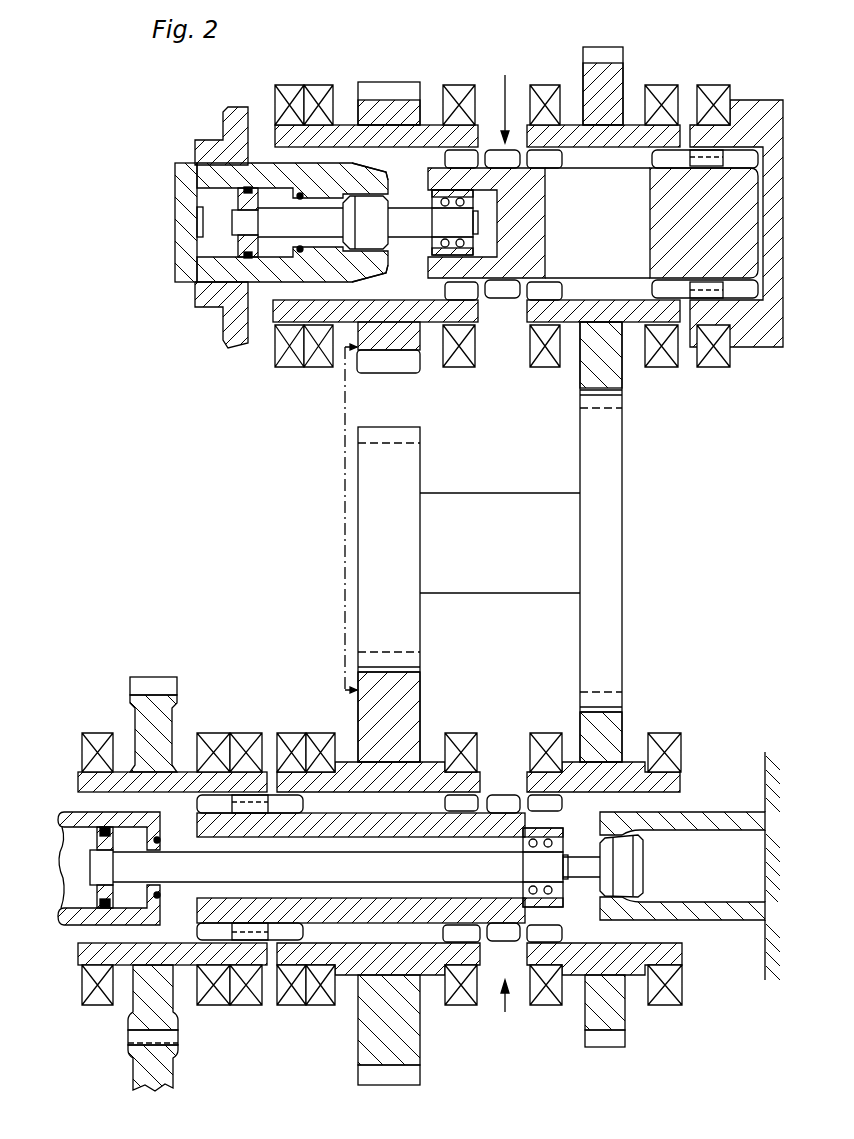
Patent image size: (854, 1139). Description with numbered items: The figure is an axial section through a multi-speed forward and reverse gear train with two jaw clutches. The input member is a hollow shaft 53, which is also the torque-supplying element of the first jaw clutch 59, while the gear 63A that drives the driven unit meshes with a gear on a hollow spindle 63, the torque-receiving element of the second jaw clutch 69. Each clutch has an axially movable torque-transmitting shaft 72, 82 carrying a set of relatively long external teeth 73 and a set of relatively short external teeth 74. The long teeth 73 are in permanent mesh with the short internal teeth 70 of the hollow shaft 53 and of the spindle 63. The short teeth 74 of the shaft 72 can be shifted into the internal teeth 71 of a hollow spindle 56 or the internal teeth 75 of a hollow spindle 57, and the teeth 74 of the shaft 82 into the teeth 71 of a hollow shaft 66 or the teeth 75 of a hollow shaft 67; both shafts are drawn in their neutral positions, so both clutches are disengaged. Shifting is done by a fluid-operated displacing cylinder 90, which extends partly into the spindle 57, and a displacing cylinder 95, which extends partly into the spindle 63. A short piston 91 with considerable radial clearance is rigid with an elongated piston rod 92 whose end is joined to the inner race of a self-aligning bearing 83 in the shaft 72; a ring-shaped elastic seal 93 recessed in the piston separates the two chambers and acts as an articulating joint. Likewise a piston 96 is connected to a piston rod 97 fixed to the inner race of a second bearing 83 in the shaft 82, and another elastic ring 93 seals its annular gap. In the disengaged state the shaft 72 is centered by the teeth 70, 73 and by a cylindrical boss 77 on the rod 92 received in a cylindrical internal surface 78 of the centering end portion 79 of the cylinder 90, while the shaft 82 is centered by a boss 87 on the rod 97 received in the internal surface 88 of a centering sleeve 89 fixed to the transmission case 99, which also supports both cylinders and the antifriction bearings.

The hollow shaft 53 is at (757, 340).
The hollow spindle 56 is at (580, 122).
The hollow spindle 57 is at (423, 120).
The first jaw clutch 59 is at (504, 96).
The hollow spindle 63 is at (183, 767).
The gear 63A is at (167, 1077).
The hollow shaft 66 is at (428, 768).
The hollow shaft 67 is at (577, 773).
The second jaw clutch 69 is at (507, 1022).
The internal gear teeth 70 is at (687, 303).
The internal gear teeth 71 is at (542, 292).
The axially movable shaft 72 is at (593, 223).
The external gear teeth 73 is at (660, 285).
The external gear teeth 74 is at (507, 292).
The internal gear teeth 75 is at (480, 302).
The boss 77 is at (365, 222).
The cylindrical internal surface 78 is at (362, 202).
The centering end portion 79 is at (350, 178).
The axially movable shaft 82 is at (345, 907).
The self-aligning bearing 83 is at (432, 245).
The boss 87 is at (625, 873).
The cylindrical internal surface 88 is at (622, 840).
The centering sleeve 89 is at (738, 820).
The displacing cylinder 90 is at (253, 173).
The piston 91 is at (240, 245).
The piston rod 92 is at (300, 222).
The elastic seal ring 93 is at (241, 196).
The displacing cylinder 95 is at (63, 813).
The piston 96 is at (98, 888).
The piston rod 97 is at (318, 867).
The transmission case 99 is at (228, 125).